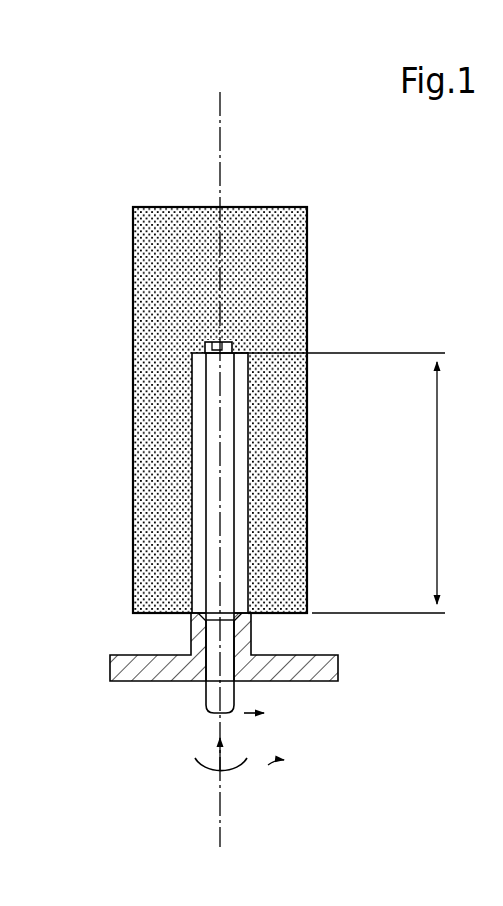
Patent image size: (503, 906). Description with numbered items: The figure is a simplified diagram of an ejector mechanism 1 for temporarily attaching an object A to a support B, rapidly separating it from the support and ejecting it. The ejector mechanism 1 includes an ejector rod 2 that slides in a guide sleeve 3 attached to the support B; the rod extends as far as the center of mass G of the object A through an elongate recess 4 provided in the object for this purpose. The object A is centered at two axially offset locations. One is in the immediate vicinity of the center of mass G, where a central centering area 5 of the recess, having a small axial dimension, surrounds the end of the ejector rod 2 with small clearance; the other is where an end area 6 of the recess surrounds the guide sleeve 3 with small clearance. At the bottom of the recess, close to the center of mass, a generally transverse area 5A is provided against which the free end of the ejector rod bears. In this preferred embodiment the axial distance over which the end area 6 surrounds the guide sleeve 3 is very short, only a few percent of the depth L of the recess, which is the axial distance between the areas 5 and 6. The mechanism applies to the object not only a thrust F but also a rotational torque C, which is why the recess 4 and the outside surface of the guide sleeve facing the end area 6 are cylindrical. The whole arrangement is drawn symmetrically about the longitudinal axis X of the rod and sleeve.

The ejector mechanism 1 is at (187, 706).
The ejector rod 2 is at (222, 573).
The guide sleeve 3 is at (251, 630).
The elongate recess 4 is at (246, 512).
The central centering area 5 is at (147, 396).
The transverse area 5A is at (206, 354).
The end area 6 is at (251, 611).
The object A is at (318, 272).
The support B is at (348, 668).
The center of mass G is at (229, 336).
The depth of the recess L is at (345, 483).
The thrust F is at (253, 731).
The rotational torque C is at (239, 779).
The axis X is at (220, 470).